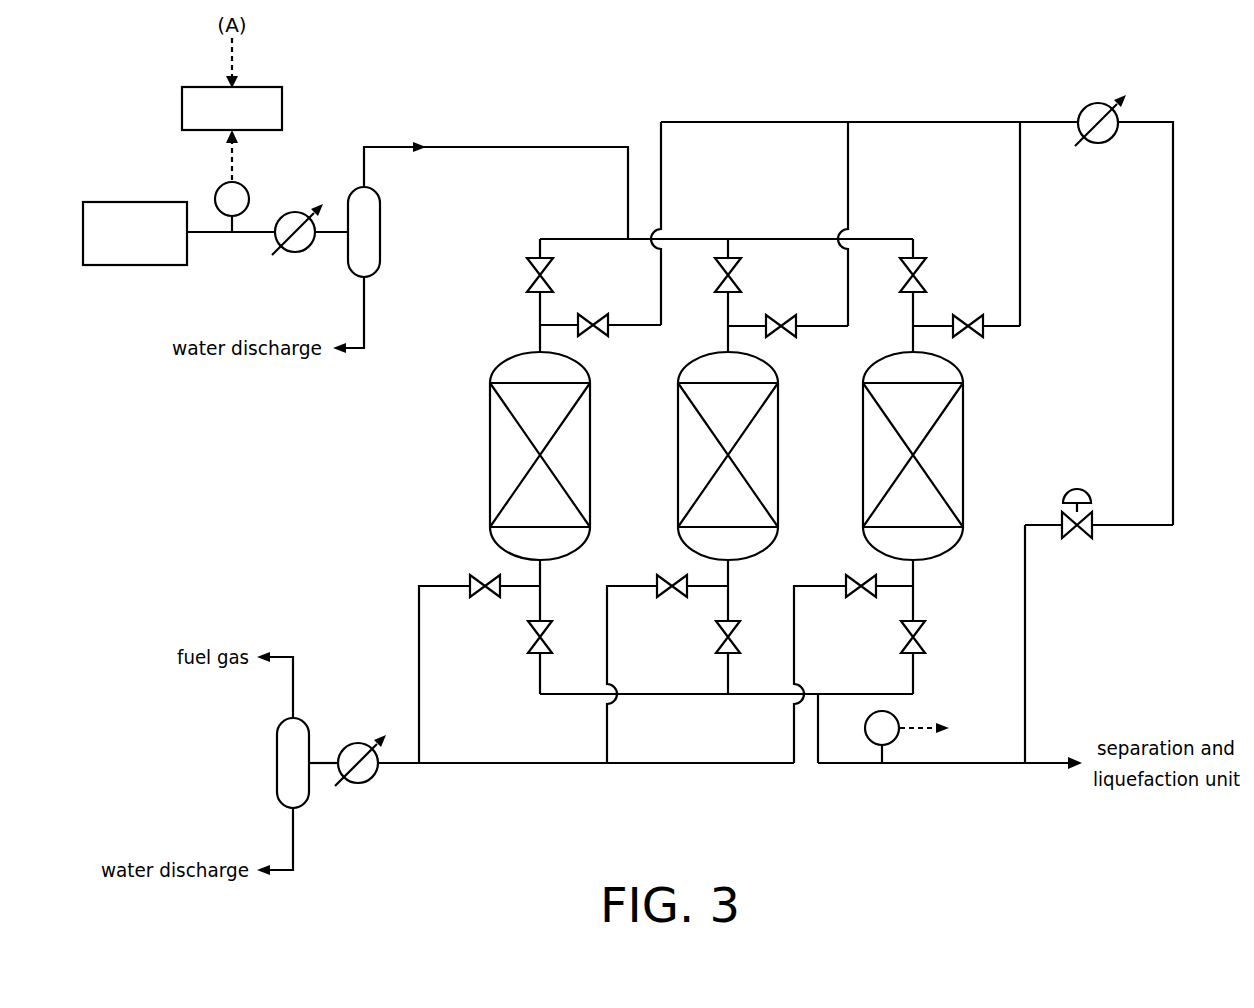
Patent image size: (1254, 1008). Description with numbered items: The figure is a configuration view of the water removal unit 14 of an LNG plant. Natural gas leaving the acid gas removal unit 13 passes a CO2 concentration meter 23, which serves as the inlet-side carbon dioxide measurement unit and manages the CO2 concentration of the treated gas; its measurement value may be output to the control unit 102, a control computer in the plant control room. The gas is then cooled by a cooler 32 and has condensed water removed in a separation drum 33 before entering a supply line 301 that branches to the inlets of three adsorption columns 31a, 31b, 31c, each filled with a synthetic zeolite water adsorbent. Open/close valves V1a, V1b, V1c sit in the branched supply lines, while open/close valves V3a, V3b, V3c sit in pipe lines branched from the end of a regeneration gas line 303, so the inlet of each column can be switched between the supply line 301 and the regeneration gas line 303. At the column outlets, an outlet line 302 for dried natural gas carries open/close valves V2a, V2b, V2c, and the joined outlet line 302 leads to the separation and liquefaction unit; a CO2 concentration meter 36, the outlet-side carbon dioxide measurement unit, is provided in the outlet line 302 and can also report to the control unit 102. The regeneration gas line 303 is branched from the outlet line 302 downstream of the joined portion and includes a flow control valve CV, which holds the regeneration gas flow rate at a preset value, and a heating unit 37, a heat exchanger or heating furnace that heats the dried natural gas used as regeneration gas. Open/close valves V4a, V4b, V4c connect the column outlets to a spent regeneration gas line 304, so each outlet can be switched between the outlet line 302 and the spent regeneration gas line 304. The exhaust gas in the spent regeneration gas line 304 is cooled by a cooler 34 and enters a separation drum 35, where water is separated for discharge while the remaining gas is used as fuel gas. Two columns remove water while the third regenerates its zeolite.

The water removal unit 14 is at (1072, 31).
The acid gas removal unit 13 is at (133, 202).
The CO2 concentration meter 23 is at (215, 187).
The control unit 102 is at (284, 68).
The cooler 32 is at (295, 211).
The separation drum 33 is at (384, 232).
The supply line 301 is at (518, 143).
The outlet line 302 is at (955, 768).
The regeneration gas line 303 is at (1176, 308).
The spent regeneration gas line 304 is at (400, 766).
The adsorption column 31a is at (490, 375).
The adsorption column 31b is at (680, 375).
The adsorption column 31c is at (866, 375).
The cooler 34 is at (358, 742).
The separation drum 35 is at (275, 764).
The CO2 concentration meter 36 is at (897, 718).
The heating unit 37 is at (1095, 102).
The flow control valve CV is at (1078, 489).
The open/close valve V1a is at (526, 272).
The open/close valve V1b is at (731, 259).
The open/close valve V1c is at (919, 259).
The open/close valve V2a is at (527, 638).
The open/close valve V2b is at (715, 638).
The open/close valve V2c is at (921, 637).
The open/close valve V3a is at (598, 303).
The open/close valve V3b is at (777, 315).
The open/close valve V3c is at (963, 315).
The open/close valve V4a is at (470, 580).
The open/close valve V4b is at (657, 580).
The open/close valve V4c is at (846, 580).